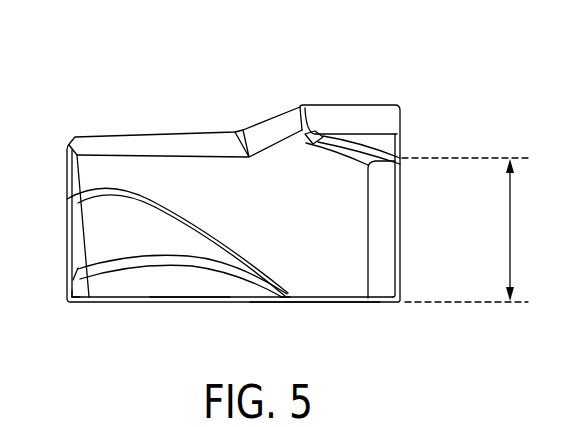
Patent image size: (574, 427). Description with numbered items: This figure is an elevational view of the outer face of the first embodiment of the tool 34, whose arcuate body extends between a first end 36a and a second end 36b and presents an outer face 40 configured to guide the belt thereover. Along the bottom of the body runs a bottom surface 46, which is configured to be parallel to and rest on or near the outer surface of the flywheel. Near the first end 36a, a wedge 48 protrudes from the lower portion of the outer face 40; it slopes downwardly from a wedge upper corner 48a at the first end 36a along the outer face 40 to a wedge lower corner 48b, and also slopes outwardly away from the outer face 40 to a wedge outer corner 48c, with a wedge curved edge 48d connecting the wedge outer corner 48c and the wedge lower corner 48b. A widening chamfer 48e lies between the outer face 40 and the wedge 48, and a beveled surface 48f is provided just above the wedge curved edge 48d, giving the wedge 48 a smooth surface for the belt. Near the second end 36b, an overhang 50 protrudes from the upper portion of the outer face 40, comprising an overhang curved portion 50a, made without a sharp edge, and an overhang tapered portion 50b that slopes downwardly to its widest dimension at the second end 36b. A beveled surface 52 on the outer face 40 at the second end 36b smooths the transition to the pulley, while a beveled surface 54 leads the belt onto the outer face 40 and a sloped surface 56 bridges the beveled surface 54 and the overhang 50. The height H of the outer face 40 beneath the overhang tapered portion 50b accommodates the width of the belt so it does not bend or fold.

The tool 34 is at (270, 74).
The first end 36a is at (66, 240).
The second end 36b is at (403, 242).
The outer face 40 is at (283, 242).
The bottom surface 46 is at (312, 303).
The wedge 48 is at (142, 242).
The wedge upper corner 48a is at (80, 200).
The wedge lower corner 48b is at (287, 294).
The wedge outer corner 48c is at (78, 303).
The wedge curved edge 48d is at (188, 303).
The widening chamfer 48e is at (197, 222).
The beveled surface 48f is at (152, 266).
The overhang 50 is at (359, 119).
The overhang curved portion 50a is at (307, 143).
The overhang tapered portion 50b is at (387, 147).
The beveled surface 52 is at (378, 202).
The beveled surface 54 is at (163, 147).
The sloped surface 56 is at (273, 147).
The height H is at (528, 222).